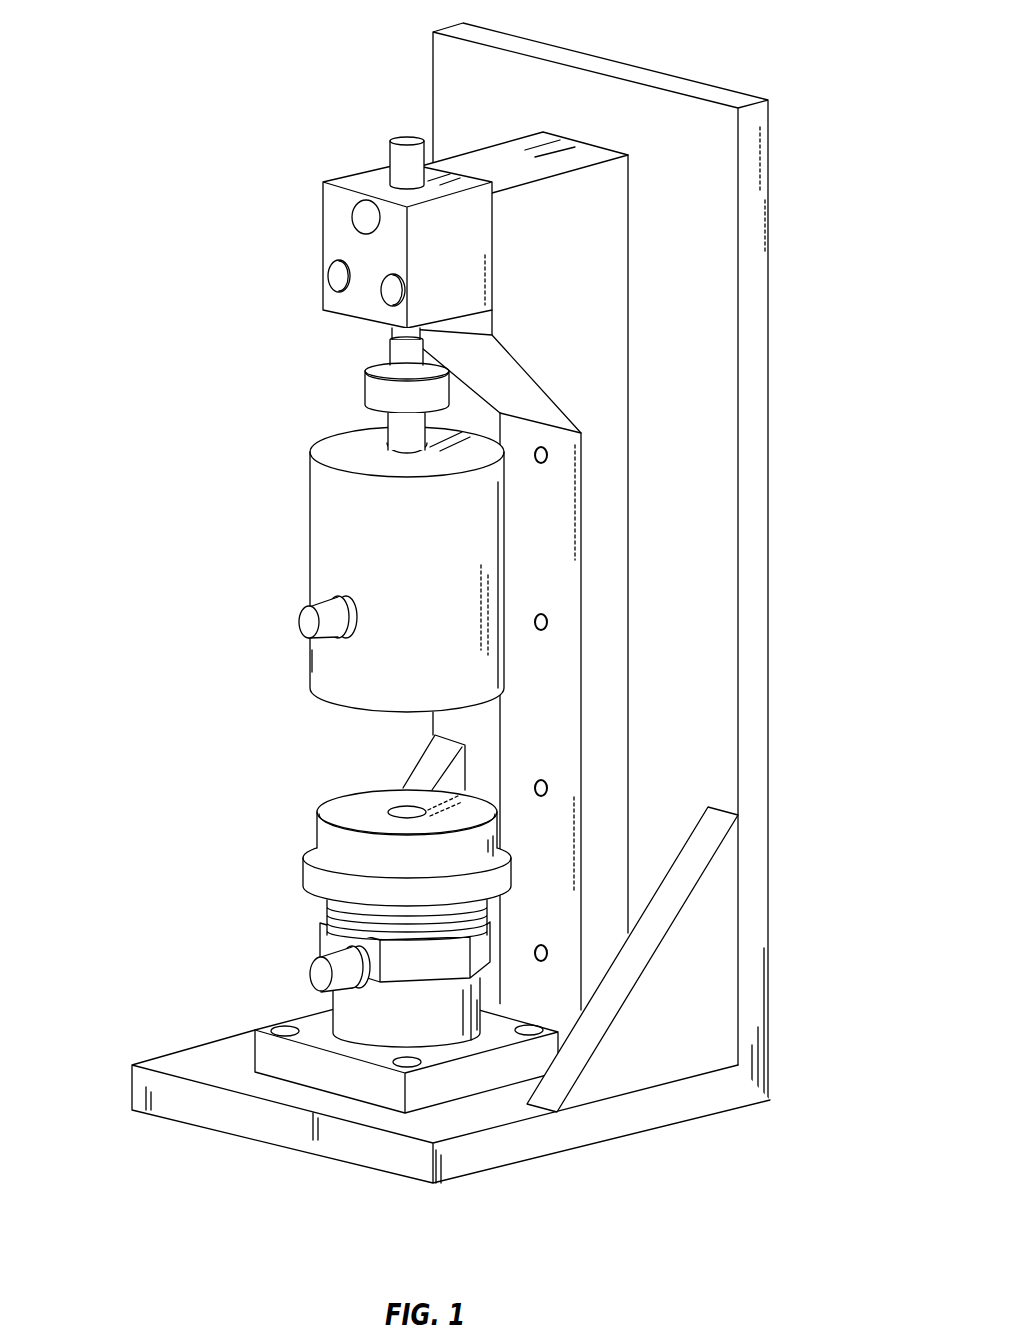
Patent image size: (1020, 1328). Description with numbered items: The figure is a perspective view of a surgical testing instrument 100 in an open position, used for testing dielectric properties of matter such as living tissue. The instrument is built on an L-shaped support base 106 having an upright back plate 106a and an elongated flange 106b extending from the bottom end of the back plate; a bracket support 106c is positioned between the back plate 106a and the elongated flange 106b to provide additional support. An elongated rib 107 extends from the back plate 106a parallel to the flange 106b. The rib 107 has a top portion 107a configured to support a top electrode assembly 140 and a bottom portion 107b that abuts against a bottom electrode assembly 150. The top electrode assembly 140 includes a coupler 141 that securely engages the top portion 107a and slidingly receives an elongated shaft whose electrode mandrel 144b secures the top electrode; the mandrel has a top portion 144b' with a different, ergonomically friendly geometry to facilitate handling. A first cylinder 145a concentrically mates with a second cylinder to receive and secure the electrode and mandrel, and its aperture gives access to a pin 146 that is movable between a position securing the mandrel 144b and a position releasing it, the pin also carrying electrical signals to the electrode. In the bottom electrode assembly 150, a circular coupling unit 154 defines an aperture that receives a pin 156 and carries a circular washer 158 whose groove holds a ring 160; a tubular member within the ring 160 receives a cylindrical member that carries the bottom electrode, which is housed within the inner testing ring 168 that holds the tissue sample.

The surgical testing instrument 100 is at (456, 597).
The L-shaped support base 106 is at (493, 597).
The back plate 106a is at (455, 95).
The elongated flange 106b is at (620, 1128).
The bracket support 106c is at (713, 1015).
The elongated rib 107 is at (631, 571).
The top portion of rib 107a is at (540, 235).
The bottom portion of rib 107b is at (612, 912).
The top electrode assembly 140 is at (345, 569).
The coupler 141 is at (352, 173).
The electrode mandrel 144b is at (341, 420).
The top portion of mandrel 144b' is at (345, 375).
The first cylinder 145a is at (318, 660).
The pin 146 is at (300, 622).
The bottom electrode assembly 150 is at (366, 924).
The circular coupling unit 154 is at (340, 1007).
The pin 156 is at (320, 972).
The circular washer 158 is at (310, 877).
The ring 160 is at (330, 842).
The inner testing ring 168 is at (353, 800).